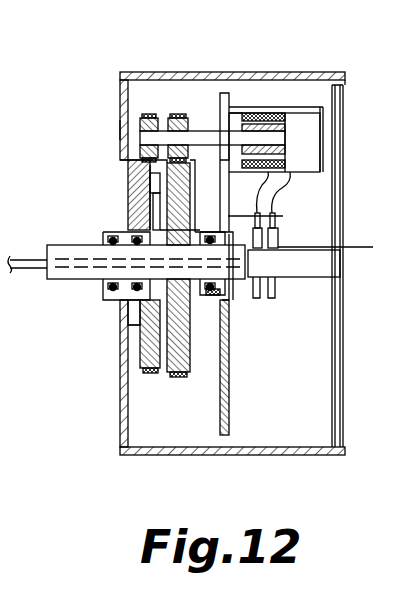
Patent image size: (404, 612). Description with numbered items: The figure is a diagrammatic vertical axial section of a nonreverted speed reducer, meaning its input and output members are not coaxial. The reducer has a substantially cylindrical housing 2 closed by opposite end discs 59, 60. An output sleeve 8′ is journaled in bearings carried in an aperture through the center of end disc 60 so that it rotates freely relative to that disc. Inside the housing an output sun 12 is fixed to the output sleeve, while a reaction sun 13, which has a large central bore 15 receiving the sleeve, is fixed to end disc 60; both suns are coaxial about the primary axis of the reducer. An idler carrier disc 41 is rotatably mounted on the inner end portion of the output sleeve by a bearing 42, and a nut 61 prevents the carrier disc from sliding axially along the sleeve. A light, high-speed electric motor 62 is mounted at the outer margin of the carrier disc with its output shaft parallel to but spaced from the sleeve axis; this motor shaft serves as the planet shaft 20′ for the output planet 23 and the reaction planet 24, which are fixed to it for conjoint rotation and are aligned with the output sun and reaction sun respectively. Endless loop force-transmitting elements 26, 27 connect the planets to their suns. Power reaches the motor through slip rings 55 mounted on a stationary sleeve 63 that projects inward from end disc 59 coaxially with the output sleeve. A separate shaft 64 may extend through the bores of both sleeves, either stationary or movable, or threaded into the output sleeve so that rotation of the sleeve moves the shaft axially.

The housing 2 is at (262, 73).
The output sleeve 8′ is at (60, 283).
The output sun 12 is at (183, 357).
The reaction sun 13 is at (145, 350).
The central bore 15 is at (138, 318).
The planet shaft 20′ is at (218, 126).
The output planet 23 is at (164, 118).
The reaction planet 24 is at (135, 161).
The endless loop force-transmitting element 26 is at (192, 162).
The endless loop force-transmitting element 27 is at (130, 175).
The idler carrier disc 41 is at (229, 388).
The bearing 42 is at (233, 300).
The slip rings 55 is at (280, 238).
The end disc 59 is at (343, 131).
The end disc 60 is at (120, 128).
The nut 61 is at (240, 290).
The electric motor 62 is at (303, 108).
The stationary sleeve 63 is at (320, 278).
The shaft 64 is at (25, 273).